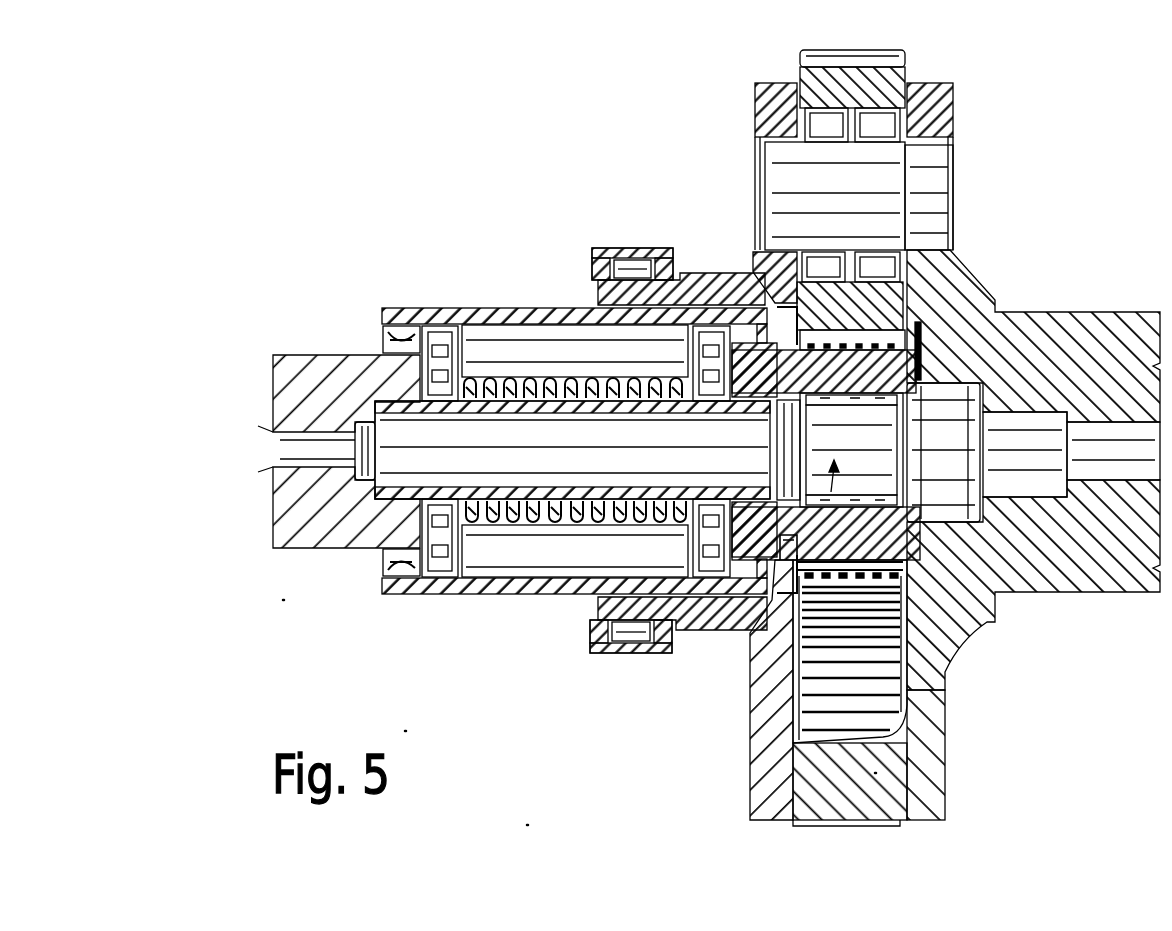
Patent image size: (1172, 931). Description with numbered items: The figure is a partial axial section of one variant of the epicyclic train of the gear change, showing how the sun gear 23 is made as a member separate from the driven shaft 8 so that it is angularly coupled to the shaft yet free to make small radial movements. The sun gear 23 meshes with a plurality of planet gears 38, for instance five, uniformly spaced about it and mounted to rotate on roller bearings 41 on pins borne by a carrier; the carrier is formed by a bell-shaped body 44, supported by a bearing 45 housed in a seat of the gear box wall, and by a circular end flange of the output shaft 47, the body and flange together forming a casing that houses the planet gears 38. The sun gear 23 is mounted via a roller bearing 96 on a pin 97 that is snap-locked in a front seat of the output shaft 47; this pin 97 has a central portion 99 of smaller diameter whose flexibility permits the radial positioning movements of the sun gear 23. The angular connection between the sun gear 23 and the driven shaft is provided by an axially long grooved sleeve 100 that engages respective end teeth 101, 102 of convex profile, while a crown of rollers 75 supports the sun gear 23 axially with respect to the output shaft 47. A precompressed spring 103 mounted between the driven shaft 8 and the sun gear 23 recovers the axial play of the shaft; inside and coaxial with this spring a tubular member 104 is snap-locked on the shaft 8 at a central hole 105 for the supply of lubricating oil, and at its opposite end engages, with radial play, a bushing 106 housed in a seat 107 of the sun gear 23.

The driven shaft 8 is at (328, 378).
The sun gear 23 is at (920, 325).
The planet gears 38 is at (880, 76).
The roller bearings 41 is at (886, 120).
The bell-shaped body 44 is at (693, 272).
The bearing 45 is at (633, 248).
The output shaft 47 is at (1117, 343).
The crown of rollers 75 is at (940, 367).
The roller bearing 96 is at (948, 458).
The pin 97 is at (790, 540).
The central portion 99 is at (1005, 592).
The grooved sleeve 100 is at (542, 318).
The end teeth 101 is at (758, 332).
The end teeth 102 is at (416, 322).
The spring 103 is at (578, 382).
The tubular member 104 is at (483, 505).
The central hole 105 is at (300, 435).
The bushing 106 is at (712, 632).
The seat 107 is at (762, 487).